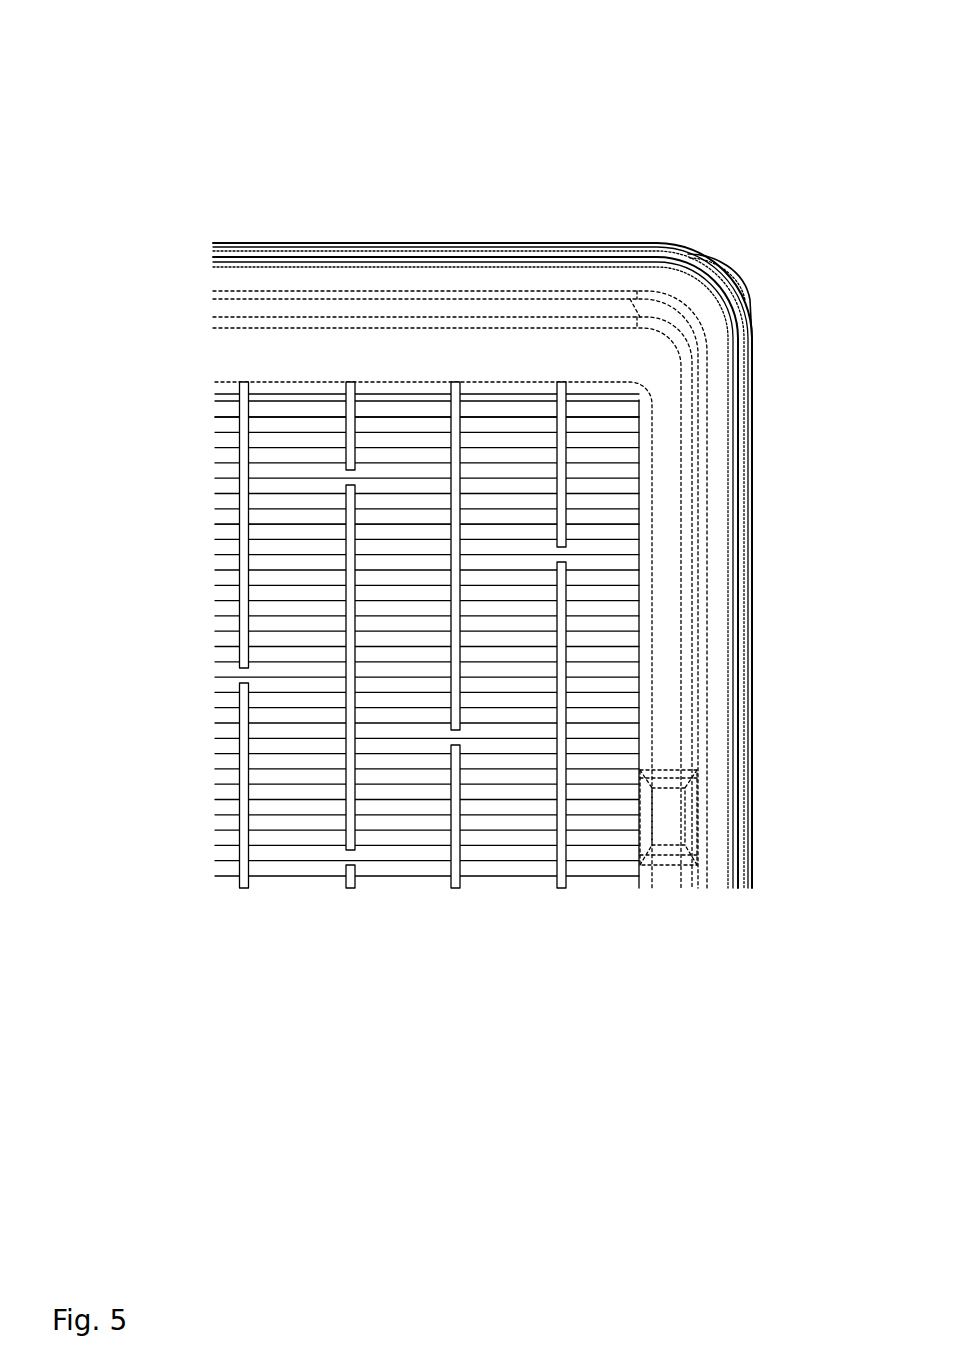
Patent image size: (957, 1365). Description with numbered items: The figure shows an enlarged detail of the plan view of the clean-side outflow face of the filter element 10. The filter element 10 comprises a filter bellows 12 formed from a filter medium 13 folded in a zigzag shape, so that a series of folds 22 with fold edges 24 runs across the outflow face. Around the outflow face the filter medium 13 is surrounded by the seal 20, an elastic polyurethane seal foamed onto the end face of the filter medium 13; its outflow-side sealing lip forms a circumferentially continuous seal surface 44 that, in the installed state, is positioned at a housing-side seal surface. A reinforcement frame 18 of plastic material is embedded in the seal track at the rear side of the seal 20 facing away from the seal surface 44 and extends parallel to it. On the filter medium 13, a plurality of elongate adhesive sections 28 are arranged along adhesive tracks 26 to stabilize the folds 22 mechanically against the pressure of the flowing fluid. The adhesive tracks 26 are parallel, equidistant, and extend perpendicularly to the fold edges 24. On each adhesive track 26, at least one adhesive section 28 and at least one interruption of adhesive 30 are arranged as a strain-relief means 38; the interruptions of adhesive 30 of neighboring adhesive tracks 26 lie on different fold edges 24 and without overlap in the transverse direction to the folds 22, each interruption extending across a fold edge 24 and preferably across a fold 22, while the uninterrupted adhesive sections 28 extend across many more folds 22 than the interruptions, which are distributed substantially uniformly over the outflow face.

The filter element 10 is at (590, 98).
The filter bellows 12 is at (352, 508).
The filter medium 13 is at (258, 418).
The reinforcement frame 18 is at (622, 247).
The seal 20 is at (497, 262).
The folds 22 is at (228, 447).
The fold edges 24 is at (232, 521).
The adhesive tracks 26 is at (243, 752).
The adhesive sections 28 is at (243, 842).
The interruption of adhesive 30 is at (243, 667).
The strain-relief means 38 is at (243, 600).
The seal surface 44 is at (736, 774).